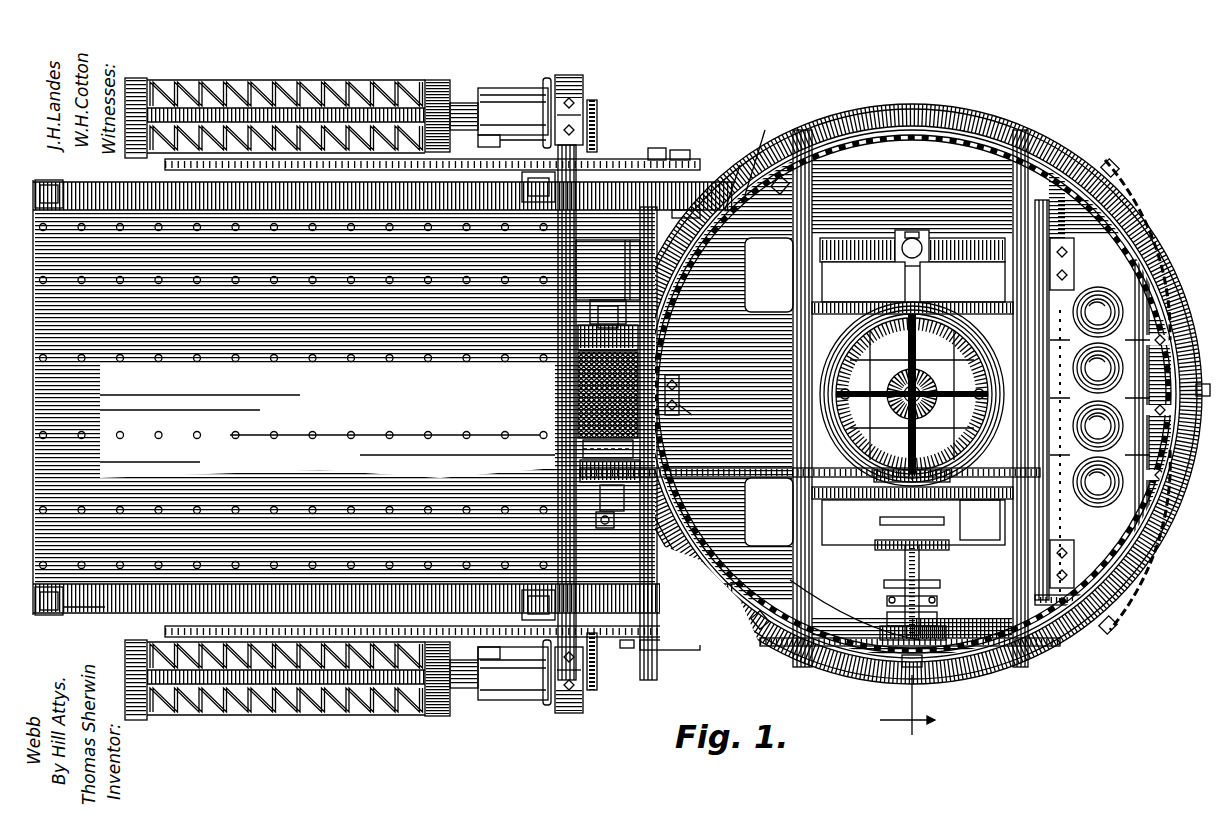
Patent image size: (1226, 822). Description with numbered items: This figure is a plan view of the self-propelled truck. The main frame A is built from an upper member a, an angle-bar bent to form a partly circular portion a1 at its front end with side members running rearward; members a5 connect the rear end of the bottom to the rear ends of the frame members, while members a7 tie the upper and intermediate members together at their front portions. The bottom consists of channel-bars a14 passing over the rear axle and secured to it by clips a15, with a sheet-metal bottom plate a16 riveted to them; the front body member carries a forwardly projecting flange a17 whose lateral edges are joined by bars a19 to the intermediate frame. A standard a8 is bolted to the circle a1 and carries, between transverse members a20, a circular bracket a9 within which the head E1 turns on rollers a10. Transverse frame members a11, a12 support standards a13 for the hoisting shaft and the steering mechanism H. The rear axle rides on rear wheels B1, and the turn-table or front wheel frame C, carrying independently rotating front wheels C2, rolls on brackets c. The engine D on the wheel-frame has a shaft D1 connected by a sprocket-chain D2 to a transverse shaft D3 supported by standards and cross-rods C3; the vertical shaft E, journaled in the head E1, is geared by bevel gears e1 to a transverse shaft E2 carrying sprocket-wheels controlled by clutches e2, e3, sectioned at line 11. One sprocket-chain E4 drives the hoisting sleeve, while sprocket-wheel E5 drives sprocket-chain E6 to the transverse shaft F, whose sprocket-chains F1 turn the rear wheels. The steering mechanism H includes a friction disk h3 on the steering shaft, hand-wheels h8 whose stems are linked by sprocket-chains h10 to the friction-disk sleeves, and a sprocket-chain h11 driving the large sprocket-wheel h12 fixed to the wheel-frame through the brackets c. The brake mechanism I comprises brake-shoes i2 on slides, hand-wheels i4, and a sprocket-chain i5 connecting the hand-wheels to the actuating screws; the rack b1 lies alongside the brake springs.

The upper member a is at (395, 585).
The partly circular portion a1 is at (930, 112).
The connecting members a5 is at (536, 204).
The connecting members a7 is at (1090, 650).
The standard a8 is at (985, 140).
The circular member or bracket a9 is at (910, 398).
The rollers a10 is at (1035, 385).
The transverse frame member a11 is at (630, 278).
The transverse frame member a12 is at (576, 258).
The standards a13 is at (590, 335).
The channel-bars a14 is at (578, 352).
The clips a15 is at (88, 622).
The sheet-metal bottom plate a16 is at (385, 453).
The forwardly projecting flange a17 is at (761, 152).
The bars a19 is at (688, 210).
The transverse members a20 is at (1085, 150).
The main frame A is at (912, 385).
The rack rail b1 is at (165, 163).
The rear wheels B1 is at (285, 85).
The brackets c is at (1020, 200).
The turn-table or front wheel frame C is at (687, 413).
The front wheels C2 is at (850, 255).
The carriage arm C3 is at (820, 245).
The engine D is at (1130, 260).
The engine shaft D1 is at (1090, 580).
The sprocket-chain D2 is at (980, 520).
The transverse shaft D3 is at (908, 262).
The bevel gears e1 is at (984, 398).
The clutch e2 is at (922, 515).
The clutch e3 is at (940, 598).
The vertical shaft E is at (925, 385).
The head E1 is at (935, 375).
The transverse shaft E2 is at (925, 668).
The sprocket-chain E4 is at (752, 470).
The sprocket-wheel E5 is at (940, 625).
The sprocket-chain E6 is at (745, 648).
The transverse shaft F is at (680, 150).
The sprocket-chains F1 is at (656, 149).
The friction disk h3 is at (578, 400).
The hand-wheels h8 is at (580, 520).
The sprocket-chains h10 is at (608, 530).
The sprocket-chain h11 is at (725, 176).
The large sprocket-wheel h12 is at (825, 620).
The steering mechanism H is at (660, 410).
The brake-shoes i2 is at (440, 82).
The hand-wheels i4 is at (545, 95).
The sprocket-chain i5 is at (598, 135).
The brake mechanism I is at (500, 92).
The section line 11 is at (907, 590).